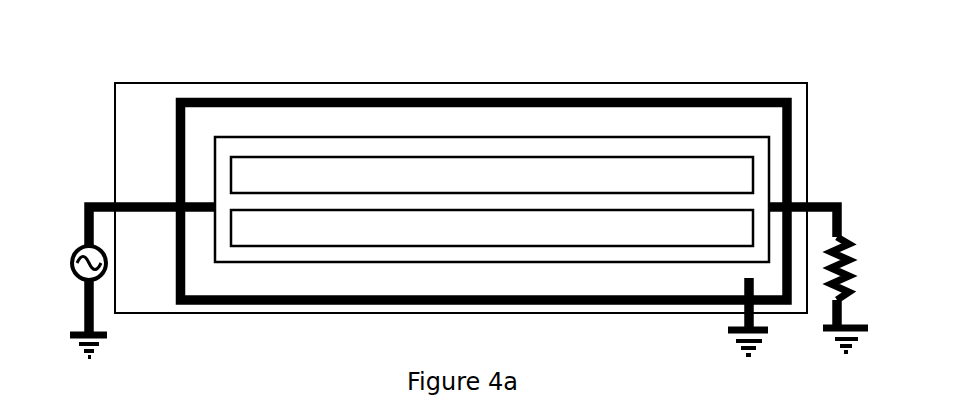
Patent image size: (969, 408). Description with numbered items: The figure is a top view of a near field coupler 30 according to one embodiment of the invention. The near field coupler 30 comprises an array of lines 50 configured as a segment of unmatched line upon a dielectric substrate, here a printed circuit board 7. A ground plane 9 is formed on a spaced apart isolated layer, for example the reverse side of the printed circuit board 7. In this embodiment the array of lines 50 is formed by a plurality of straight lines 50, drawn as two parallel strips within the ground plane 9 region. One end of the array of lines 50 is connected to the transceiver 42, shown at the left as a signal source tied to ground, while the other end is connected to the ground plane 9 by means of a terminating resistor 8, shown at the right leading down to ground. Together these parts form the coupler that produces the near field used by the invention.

The near field coupler 30 is at (242, 72).
The printed circuit board 7 is at (810, 120).
The ground plane 9 is at (662, 123).
The array of lines 50 is at (327, 146).
The transceiver 42 is at (67, 247).
The terminating resistor 8 is at (824, 279).